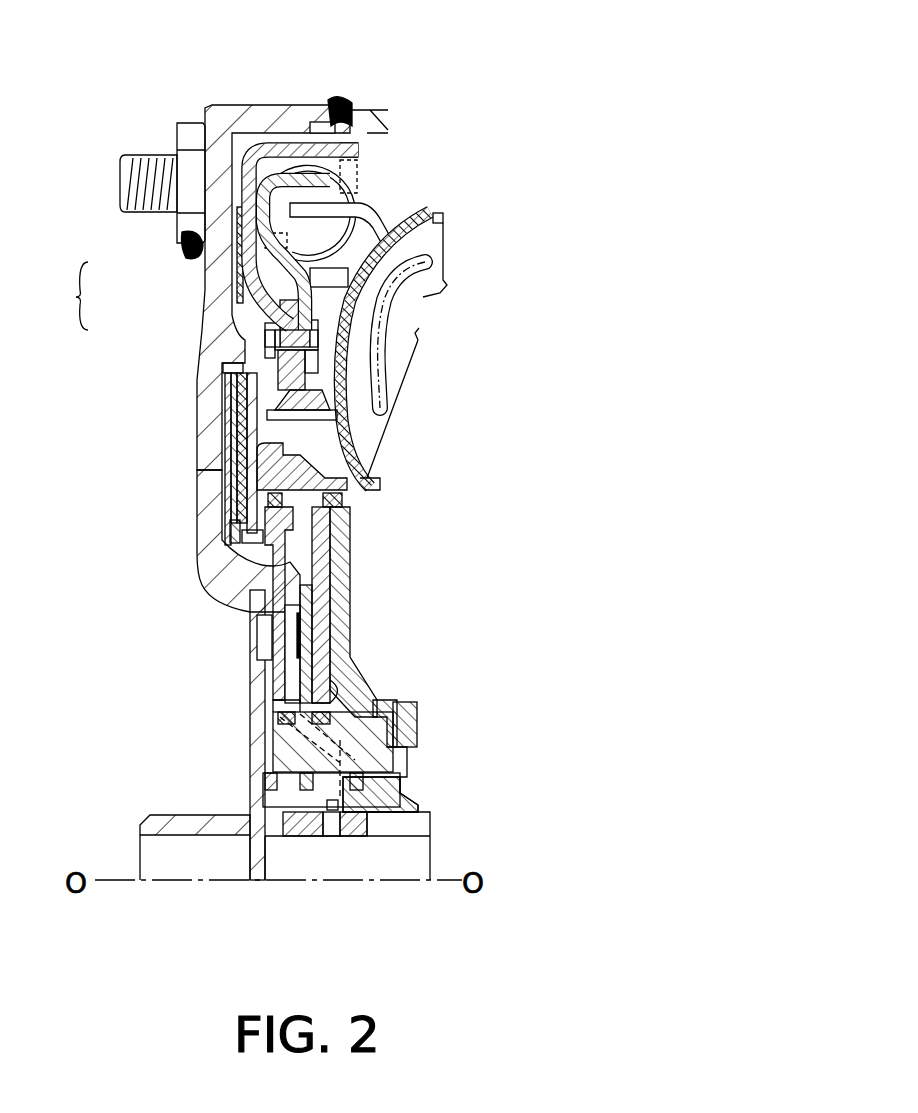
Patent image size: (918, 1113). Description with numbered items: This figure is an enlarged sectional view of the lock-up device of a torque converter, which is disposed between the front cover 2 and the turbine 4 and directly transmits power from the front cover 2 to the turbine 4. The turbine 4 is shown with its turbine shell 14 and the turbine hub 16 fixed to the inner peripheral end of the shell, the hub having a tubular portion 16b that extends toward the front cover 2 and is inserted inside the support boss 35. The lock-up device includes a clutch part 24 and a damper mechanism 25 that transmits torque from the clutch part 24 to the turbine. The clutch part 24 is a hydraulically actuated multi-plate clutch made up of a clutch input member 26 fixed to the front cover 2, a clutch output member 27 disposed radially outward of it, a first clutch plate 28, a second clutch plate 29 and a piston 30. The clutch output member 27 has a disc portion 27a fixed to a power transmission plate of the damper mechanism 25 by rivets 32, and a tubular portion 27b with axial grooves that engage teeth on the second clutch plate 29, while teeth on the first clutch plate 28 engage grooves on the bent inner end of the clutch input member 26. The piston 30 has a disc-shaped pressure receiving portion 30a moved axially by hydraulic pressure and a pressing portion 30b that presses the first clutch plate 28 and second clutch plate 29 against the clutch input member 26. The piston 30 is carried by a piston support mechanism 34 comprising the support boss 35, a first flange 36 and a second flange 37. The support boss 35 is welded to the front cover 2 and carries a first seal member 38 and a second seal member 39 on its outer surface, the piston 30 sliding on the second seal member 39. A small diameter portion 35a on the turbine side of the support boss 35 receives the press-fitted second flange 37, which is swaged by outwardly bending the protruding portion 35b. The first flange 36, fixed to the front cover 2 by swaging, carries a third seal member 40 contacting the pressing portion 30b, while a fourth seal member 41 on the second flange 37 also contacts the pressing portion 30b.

The front cover 2 is at (237, 122).
The turbine 4 is at (443, 290).
The turbine shell 14 is at (440, 215).
The turbine hub 16 is at (418, 727).
The tubular portion 16b is at (400, 810).
The clutch part 24 is at (243, 367).
The damper mechanism 25 is at (380, 177).
The clutch input member 26 is at (227, 503).
The clutch output member 27 is at (195, 247).
The disc portion 27a is at (257, 293).
The tubular portion 27b is at (262, 333).
The first clutch plate 28 is at (235, 570).
The second clutch plate 29 is at (240, 412).
The piston 30 is at (303, 457).
The pressure receiving portion 30a is at (317, 557).
The pressing portion 30b is at (330, 460).
The rivets 32 is at (340, 338).
The piston support mechanism 34 is at (358, 625).
The support boss 35 is at (287, 743).
The small diameter portion 35a is at (376, 718).
The protruding portion 35b is at (410, 705).
The first flange 36 is at (270, 597).
The second flange 37 is at (345, 593).
The first seal member 38 is at (275, 713).
The second seal member 39 is at (336, 690).
The third seal member 40 is at (247, 468).
The fourth seal member 41 is at (362, 495).